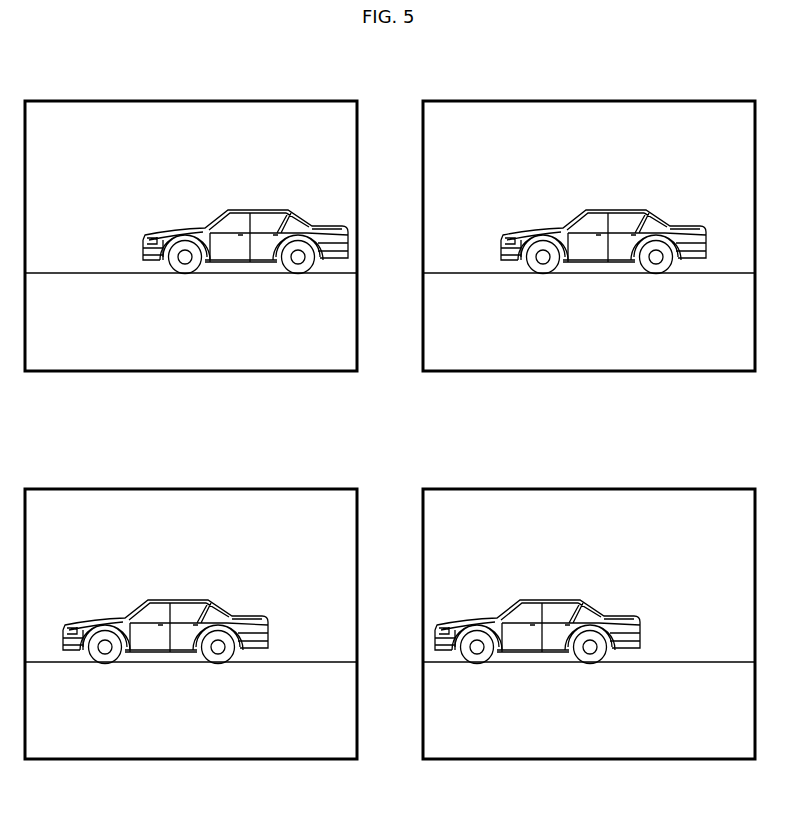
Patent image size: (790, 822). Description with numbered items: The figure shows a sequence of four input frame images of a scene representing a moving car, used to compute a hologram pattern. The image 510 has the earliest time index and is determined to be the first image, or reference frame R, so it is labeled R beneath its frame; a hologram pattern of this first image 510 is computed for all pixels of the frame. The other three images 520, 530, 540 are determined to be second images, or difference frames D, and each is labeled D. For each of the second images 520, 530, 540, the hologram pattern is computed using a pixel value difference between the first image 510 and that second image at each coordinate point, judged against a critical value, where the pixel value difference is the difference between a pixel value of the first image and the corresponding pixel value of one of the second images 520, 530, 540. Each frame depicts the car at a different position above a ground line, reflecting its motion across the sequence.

The first image 510 is at (190, 101).
The second image 520 is at (588, 101).
The second image 530 is at (190, 489).
The second image 540 is at (588, 489).